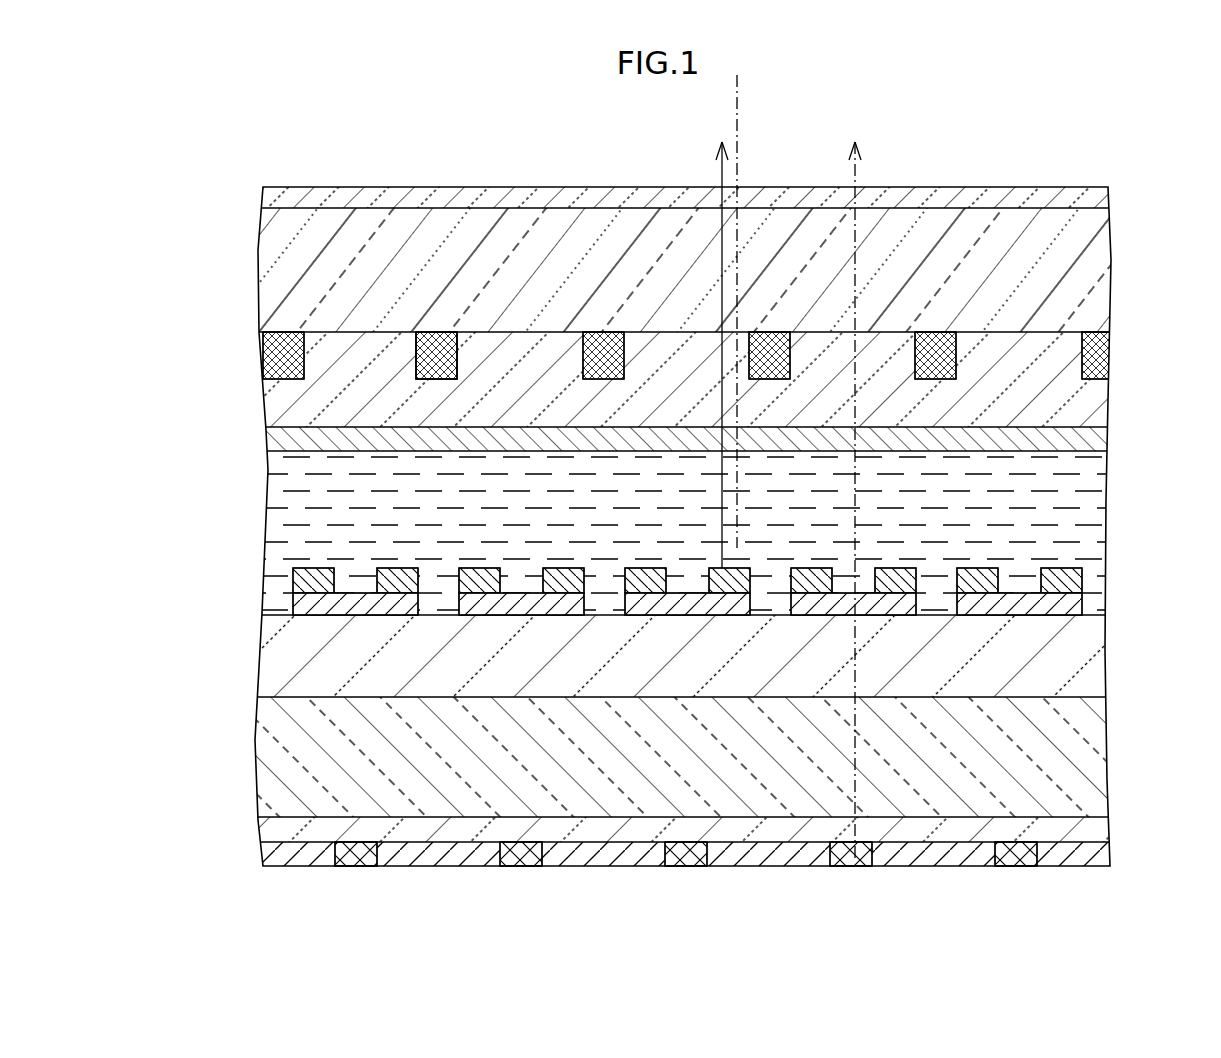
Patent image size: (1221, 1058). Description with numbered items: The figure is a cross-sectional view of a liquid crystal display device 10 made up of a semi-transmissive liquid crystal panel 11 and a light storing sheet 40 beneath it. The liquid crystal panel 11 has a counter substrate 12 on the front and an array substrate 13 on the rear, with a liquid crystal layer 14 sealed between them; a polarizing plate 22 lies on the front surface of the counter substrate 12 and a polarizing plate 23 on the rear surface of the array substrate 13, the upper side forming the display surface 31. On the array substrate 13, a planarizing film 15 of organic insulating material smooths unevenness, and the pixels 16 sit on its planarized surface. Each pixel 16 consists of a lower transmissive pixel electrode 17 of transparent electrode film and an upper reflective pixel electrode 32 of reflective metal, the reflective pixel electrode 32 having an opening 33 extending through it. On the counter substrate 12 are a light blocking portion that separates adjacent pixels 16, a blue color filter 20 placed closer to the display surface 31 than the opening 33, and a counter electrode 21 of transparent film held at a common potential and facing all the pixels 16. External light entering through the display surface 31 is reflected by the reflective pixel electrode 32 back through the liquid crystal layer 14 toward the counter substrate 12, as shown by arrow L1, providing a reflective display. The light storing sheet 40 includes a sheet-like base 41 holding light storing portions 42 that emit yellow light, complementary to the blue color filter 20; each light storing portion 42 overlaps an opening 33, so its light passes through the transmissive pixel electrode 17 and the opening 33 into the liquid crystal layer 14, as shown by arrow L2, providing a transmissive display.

The liquid crystal display device 10 is at (1093, 165).
The liquid crystal panel 11 is at (1135, 482).
The counter substrate 12 is at (275, 278).
The array substrate 13 is at (285, 768).
The liquid crystal layer 14 is at (300, 530).
The planarizing film 15 is at (290, 662).
The pixel 16 is at (687, 767).
The transmissive pixel electrode 17 is at (648, 603).
The color filter 20 is at (277, 412).
The counter electrode 21 is at (270, 440).
The polarizing plate 22 is at (989, 203).
The polarizing plate 23 is at (973, 823).
The display surface 31 is at (344, 187).
The reflective pixel electrode 32 is at (612, 592).
The opening 33 is at (680, 568).
The light storing sheet 40 is at (1065, 866).
The base 41 is at (403, 864).
The light storing portion 42 is at (688, 868).
The arrow L1 is at (716, 340).
The arrow L2 is at (854, 487).